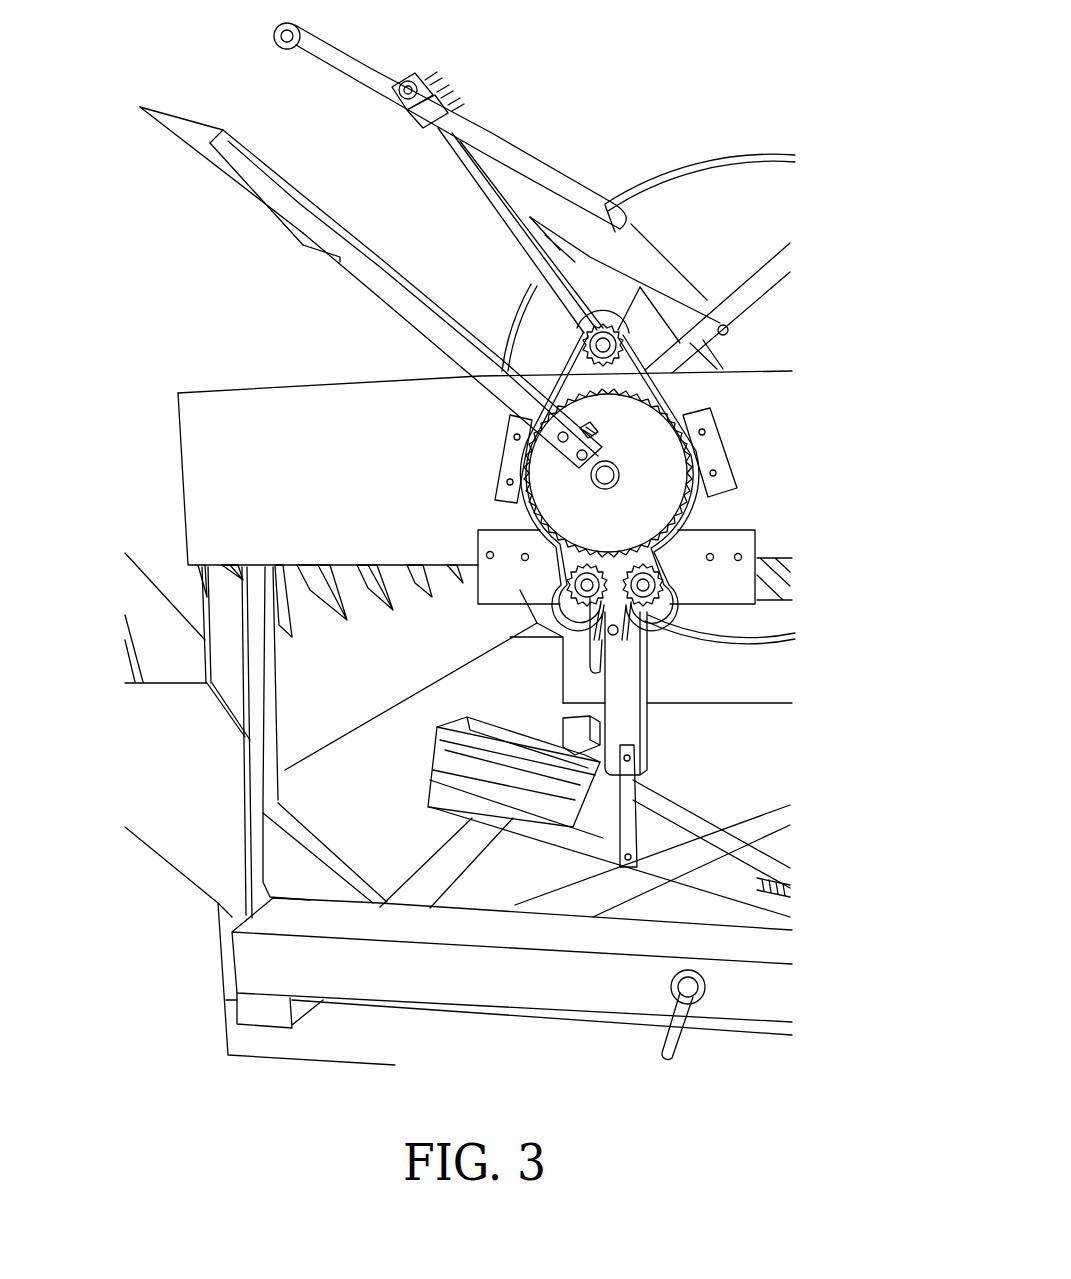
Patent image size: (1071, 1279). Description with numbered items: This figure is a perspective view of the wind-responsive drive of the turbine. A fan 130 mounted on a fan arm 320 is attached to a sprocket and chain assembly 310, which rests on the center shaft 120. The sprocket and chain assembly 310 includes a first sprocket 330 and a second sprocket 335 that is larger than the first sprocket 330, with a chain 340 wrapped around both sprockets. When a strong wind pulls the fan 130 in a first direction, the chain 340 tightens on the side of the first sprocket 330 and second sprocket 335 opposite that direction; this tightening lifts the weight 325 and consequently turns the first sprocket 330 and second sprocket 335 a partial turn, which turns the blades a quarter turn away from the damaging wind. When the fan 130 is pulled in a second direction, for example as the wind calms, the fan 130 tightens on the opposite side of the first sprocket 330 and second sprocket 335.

The fan 130 is at (207, 126).
The fan arm 320 is at (415, 295).
The first sprocket 330 is at (624, 345).
The chain 340 is at (663, 392).
The sprocket and chain assembly 310 is at (748, 413).
The center shaft 120 is at (620, 472).
The second sprocket 335 is at (647, 502).
The weight 325 is at (508, 735).